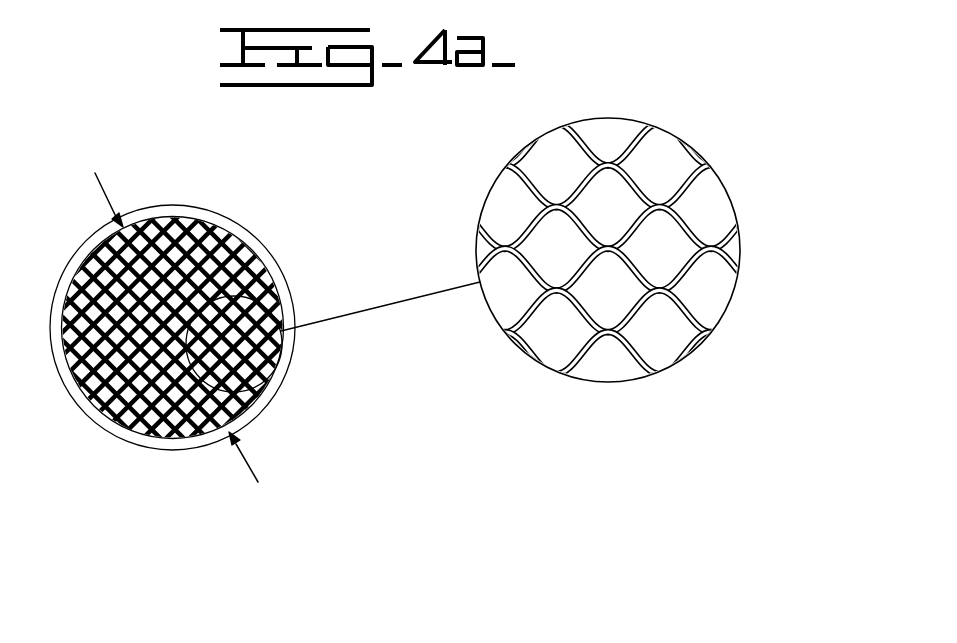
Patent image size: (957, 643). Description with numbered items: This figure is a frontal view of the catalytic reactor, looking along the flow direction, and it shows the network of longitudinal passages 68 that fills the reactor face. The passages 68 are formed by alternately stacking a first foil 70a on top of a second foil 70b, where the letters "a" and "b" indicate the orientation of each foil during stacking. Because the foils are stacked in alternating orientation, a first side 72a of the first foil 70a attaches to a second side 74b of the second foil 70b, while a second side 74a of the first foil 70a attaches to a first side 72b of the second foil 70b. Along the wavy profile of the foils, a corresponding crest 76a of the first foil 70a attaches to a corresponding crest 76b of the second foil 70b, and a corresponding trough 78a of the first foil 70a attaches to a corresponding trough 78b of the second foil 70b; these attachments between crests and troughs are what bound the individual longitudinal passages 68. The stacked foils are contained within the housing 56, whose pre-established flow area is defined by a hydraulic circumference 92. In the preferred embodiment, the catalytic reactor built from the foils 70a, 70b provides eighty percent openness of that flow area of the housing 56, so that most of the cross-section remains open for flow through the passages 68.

The housing 56 is at (177, 452).
The network of longitudinal passages 68 is at (160, 232).
The hydraulic circumference 92 is at (258, 482).
The first foil 70a is at (705, 178).
The second foil 70b is at (728, 230).
The first side of the first foil 72a is at (530, 150).
The first side of the second foil 72b is at (480, 243).
The second side of the first foil 74a is at (480, 254).
The second side of the second foil 74b is at (530, 181).
The crest of the first foil 76a is at (504, 272).
The crest of the second foil 76b is at (504, 265).
The trough of the first foil 78a is at (504, 262).
The trough of the second foil 78b is at (540, 268).